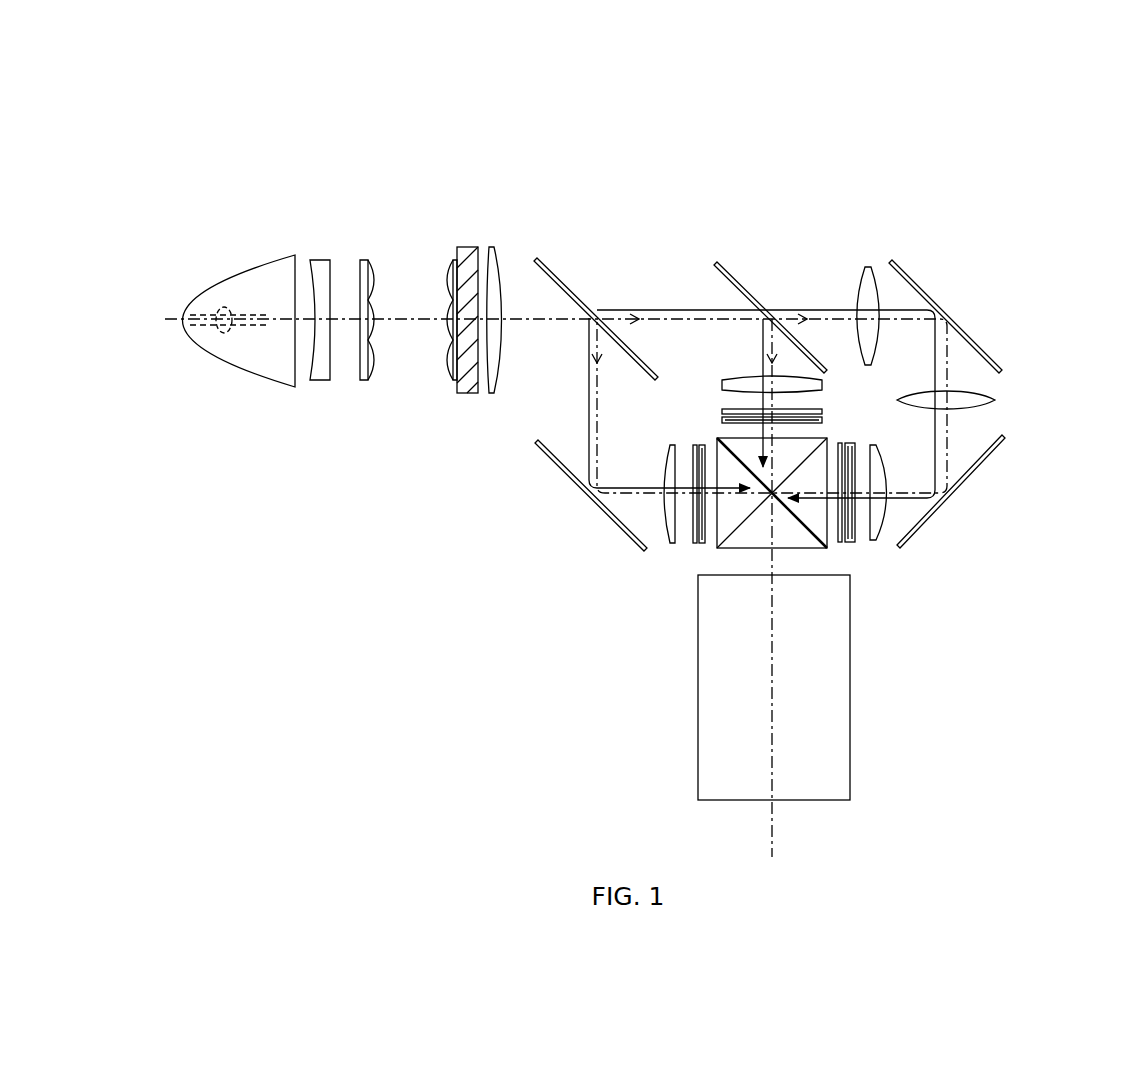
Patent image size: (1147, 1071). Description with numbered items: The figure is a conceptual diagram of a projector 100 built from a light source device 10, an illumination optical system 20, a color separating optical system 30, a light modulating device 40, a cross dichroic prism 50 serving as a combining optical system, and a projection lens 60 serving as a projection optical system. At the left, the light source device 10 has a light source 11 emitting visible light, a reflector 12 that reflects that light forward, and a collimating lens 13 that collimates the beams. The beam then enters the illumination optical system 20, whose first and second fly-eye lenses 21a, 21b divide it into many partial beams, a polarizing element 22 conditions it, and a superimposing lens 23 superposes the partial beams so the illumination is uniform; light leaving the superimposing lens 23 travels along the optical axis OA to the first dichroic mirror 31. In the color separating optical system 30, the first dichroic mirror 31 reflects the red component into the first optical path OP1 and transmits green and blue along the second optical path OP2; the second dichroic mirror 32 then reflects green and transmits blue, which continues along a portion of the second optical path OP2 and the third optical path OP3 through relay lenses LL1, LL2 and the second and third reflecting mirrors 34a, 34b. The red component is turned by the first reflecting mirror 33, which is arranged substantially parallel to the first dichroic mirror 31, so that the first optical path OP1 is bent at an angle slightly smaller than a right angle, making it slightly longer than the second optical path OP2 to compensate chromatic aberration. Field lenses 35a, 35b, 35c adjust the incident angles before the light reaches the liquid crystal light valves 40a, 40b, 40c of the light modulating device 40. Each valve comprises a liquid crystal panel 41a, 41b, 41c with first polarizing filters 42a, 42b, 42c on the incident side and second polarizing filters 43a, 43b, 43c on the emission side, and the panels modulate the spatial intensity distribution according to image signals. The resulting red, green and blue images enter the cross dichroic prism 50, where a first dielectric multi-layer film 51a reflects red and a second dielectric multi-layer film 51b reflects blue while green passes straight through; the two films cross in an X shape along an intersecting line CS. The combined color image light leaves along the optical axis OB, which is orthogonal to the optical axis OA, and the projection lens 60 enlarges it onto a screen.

The projector 100 is at (1064, 92).
The light source device 10 is at (257, 332).
The light source 11 is at (218, 305).
The reflector 12 is at (242, 263).
The collimating lens 13 is at (320, 383).
The illumination optical system 20 is at (403, 241).
The first fly-eye lens 21a is at (362, 263).
The second fly-eye lens 21b is at (447, 258).
The polarizing element 22 is at (468, 247).
The superimposing lens 23 is at (492, 250).
The color separating optical system 30 is at (768, 343).
The first dichroic mirror 31 is at (571, 286).
The second dichroic mirror 32 is at (737, 277).
The first reflecting mirror 33 is at (552, 462).
The second reflecting mirror 34a is at (942, 303).
The third reflecting mirror 34b is at (975, 465).
The relay lens LL1 is at (872, 267).
The relay lens LL2 is at (995, 397).
The first optical path OP1 is at (589, 418).
The second optical path OP2 is at (686, 312).
The third optical path OP3 is at (935, 425).
The optical axis of illumination light OA is at (407, 322).
The light modulating device 40 is at (769, 494).
The liquid crystal light valve 40a is at (607, 548).
The liquid crystal light valve 40b is at (761, 380).
The liquid crystal light valve 40c is at (939, 498).
The field lens 35a is at (665, 505).
The field lens 35b is at (723, 382).
The field lens 35c is at (889, 505).
The liquid crystal panel 41a is at (690, 544).
The liquid crystal panel 41b is at (722, 418).
The liquid crystal panel 41c is at (856, 504).
The first polarizing filter 42a is at (672, 443).
The first polarizing filter 42b is at (823, 418).
The first polarizing filter 42c is at (857, 444).
The second polarizing filter 43a is at (705, 547).
The second polarizing filter 43b is at (829, 413).
The second polarizing filter 43c is at (845, 546).
The cross dichroic prism 50 is at (807, 565).
The first dielectric multi-layer film 51a is at (815, 546).
The second dielectric multi-layer film 51b is at (735, 533).
The intersecting line CS is at (826, 552).
The optical axis of emission light OB is at (775, 560).
The projection lens 60 is at (718, 705).